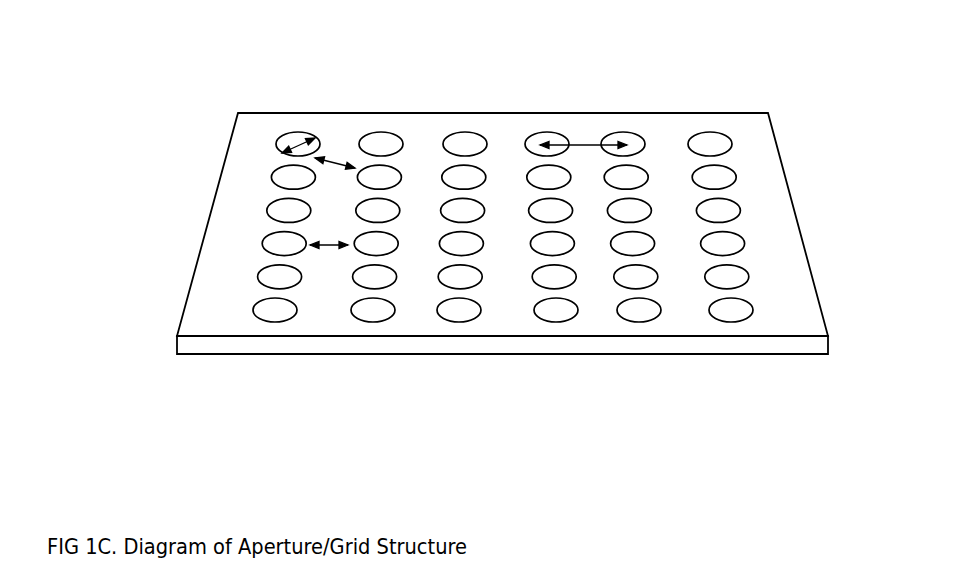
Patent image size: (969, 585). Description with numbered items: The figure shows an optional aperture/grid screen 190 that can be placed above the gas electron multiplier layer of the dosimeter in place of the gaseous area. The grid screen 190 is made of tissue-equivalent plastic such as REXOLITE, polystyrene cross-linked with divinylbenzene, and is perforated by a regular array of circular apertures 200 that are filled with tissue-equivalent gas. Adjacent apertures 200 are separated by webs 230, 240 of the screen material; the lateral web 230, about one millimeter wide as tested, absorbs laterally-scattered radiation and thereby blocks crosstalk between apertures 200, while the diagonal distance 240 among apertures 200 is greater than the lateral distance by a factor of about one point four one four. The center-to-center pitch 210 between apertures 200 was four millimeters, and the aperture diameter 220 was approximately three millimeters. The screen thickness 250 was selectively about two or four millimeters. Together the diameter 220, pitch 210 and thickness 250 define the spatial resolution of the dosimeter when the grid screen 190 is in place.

The aperture/grid screen 190 is at (757, 135).
The circular apertures 200 is at (463, 143).
The pitch 210 is at (580, 145).
The aperture diameter 220 is at (292, 147).
The web 230 is at (332, 245).
The diagonal distance 240 is at (336, 158).
The screen thickness 250 is at (837, 310).